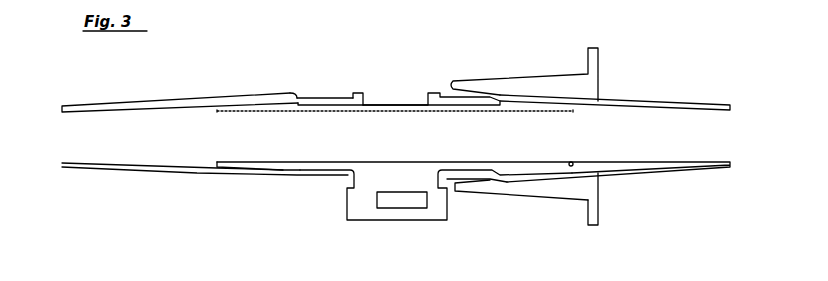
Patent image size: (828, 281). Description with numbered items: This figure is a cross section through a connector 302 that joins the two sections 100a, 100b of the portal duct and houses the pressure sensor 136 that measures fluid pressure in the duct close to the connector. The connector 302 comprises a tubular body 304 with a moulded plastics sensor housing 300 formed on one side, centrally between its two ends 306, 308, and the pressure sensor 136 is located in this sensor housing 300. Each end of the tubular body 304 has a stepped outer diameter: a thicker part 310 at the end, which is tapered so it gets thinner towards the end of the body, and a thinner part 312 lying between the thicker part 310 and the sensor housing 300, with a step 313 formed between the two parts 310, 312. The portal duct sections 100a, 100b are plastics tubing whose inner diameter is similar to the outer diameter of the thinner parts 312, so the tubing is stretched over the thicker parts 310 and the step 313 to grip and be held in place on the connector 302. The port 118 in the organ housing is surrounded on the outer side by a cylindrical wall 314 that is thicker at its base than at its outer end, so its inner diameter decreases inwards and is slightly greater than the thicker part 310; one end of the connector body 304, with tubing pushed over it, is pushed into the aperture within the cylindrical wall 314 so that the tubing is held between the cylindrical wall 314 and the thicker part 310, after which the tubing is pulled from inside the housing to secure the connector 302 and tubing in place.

The portal duct section 100a is at (135, 106).
The portal duct section 100b is at (663, 103).
The port 118 is at (597, 82).
The pressure sensor 136 is at (405, 202).
The sensor housing 300 is at (347, 208).
The connector 302 is at (376, 106).
The tubular body 304 is at (415, 104).
The end of tubular body 306 is at (217, 165).
The end of tubular body 308 is at (572, 165).
The thicker part 310 is at (243, 107).
The thinner part 312 is at (317, 103).
The step 313 is at (292, 99).
The cylindrical wall 314 is at (530, 193).